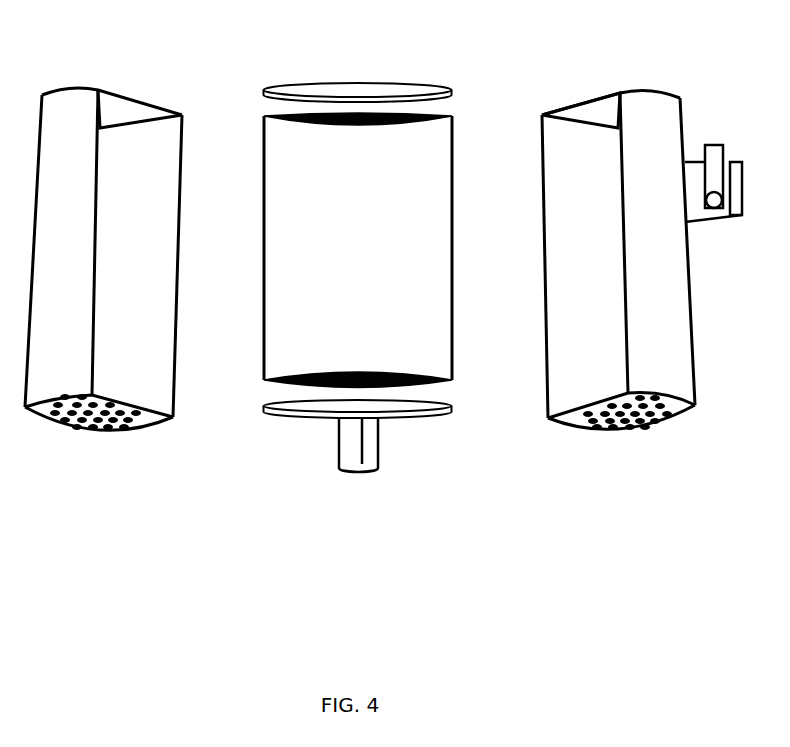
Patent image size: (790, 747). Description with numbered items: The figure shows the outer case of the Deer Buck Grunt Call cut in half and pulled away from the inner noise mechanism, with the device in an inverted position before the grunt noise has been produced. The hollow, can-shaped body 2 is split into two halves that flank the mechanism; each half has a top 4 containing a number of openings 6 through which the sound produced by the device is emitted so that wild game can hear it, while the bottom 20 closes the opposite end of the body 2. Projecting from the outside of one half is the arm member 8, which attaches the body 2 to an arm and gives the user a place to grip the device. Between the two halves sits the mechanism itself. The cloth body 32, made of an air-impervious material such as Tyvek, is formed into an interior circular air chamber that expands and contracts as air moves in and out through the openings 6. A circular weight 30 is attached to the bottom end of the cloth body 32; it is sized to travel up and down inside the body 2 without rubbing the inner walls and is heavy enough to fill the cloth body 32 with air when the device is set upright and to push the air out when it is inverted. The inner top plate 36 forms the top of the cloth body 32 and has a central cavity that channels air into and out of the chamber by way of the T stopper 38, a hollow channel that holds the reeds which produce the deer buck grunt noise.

The body 2 is at (672, 291).
The top 4 is at (42, 408).
The openings 6 is at (670, 412).
The arm member 8 is at (693, 168).
The bottom 20 is at (130, 108).
The circular weight 30 is at (365, 82).
The cloth body 32 is at (290, 255).
The inner top plate 36 is at (288, 411).
The T stopper 38 is at (370, 451).